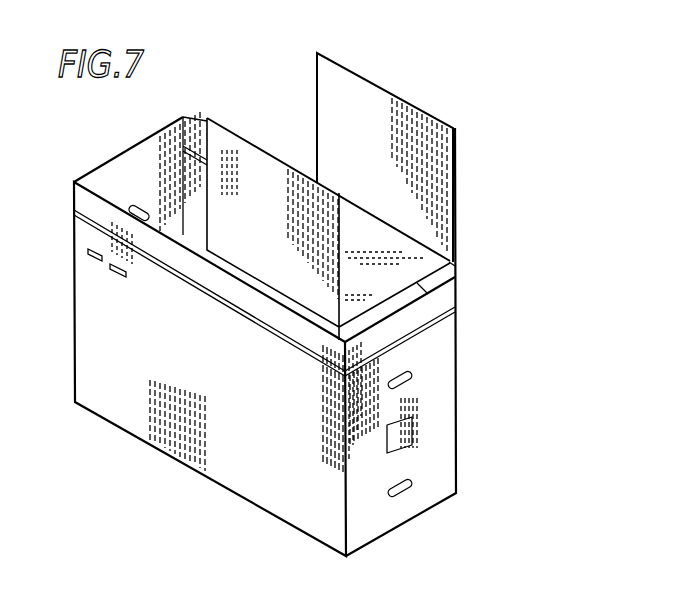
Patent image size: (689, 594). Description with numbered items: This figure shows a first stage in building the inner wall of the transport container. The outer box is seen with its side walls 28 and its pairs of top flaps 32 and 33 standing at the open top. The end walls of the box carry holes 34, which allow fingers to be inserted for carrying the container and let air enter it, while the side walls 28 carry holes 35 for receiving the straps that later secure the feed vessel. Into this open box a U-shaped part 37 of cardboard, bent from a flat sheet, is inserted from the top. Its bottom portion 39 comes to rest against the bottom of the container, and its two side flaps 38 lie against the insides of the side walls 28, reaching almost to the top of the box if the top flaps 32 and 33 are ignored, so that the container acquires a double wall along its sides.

The side wall 28 is at (245, 485).
The top flap 32 is at (260, 308).
The top flap 33 is at (452, 308).
The hole 34 is at (140, 213).
The hole 35 is at (118, 272).
The U-shaped part 37 is at (423, 113).
The side flap 38 is at (253, 158).
The bottom portion 39 is at (451, 264).